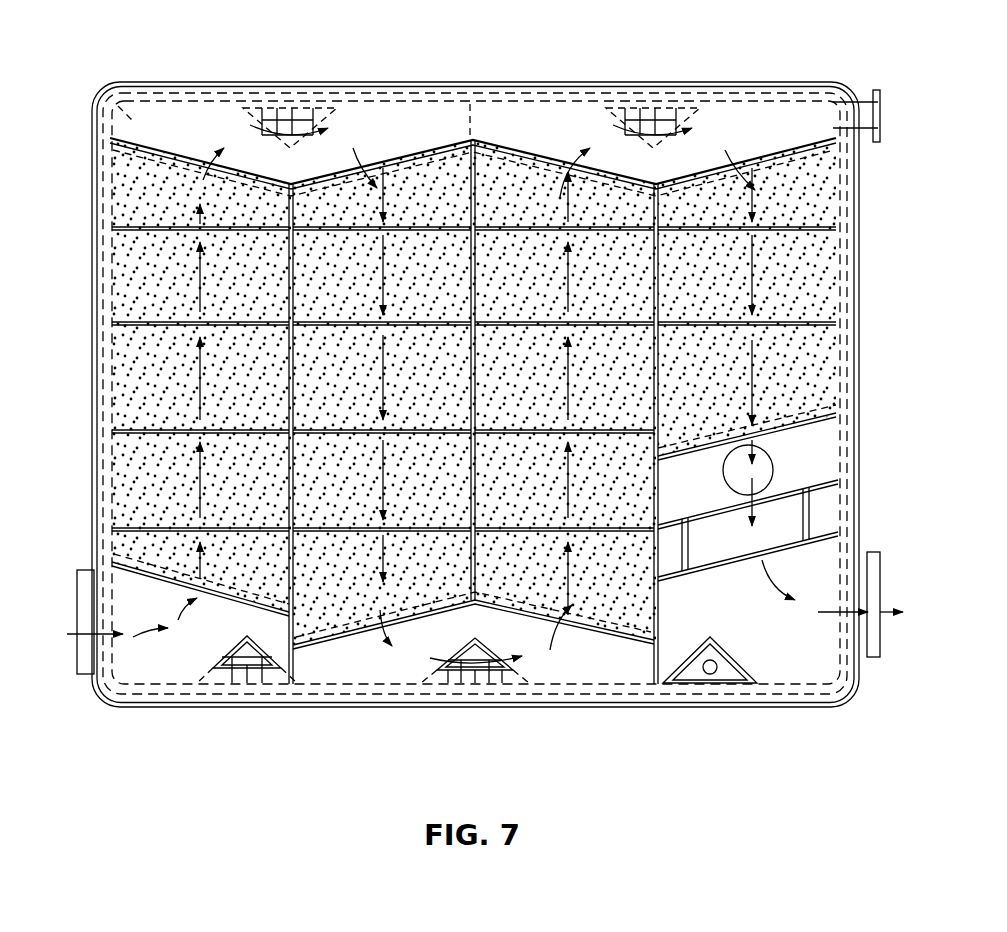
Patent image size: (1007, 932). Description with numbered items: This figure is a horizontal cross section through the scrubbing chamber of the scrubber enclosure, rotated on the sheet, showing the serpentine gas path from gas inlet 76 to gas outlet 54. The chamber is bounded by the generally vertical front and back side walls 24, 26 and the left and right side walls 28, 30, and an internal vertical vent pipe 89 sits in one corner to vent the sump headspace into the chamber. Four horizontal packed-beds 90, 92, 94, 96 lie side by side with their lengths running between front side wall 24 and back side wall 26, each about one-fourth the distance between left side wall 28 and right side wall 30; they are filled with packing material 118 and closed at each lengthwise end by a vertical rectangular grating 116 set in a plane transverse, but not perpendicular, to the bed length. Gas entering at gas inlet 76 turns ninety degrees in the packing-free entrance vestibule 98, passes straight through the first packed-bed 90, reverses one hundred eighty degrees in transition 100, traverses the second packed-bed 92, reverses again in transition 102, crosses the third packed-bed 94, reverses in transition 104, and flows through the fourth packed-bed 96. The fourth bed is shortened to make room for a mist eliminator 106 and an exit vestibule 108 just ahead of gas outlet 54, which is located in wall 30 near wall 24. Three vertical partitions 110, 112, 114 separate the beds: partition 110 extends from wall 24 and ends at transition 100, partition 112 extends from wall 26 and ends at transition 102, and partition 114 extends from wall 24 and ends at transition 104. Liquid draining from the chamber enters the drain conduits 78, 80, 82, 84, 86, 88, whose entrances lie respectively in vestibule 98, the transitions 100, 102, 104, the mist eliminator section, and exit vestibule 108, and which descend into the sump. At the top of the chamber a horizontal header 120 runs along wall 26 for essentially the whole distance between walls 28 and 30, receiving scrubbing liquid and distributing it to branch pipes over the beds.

The front side wall 24 is at (512, 705).
The back side wall 26 is at (245, 88).
The left side wall 28 is at (100, 272).
The right side wall 30 is at (862, 295).
The gas outlet 54 is at (872, 660).
The gas inlet 76 is at (90, 568).
The drain conduit 78 is at (243, 672).
The drain conduit 80 is at (300, 110).
The drain conduit 82 is at (465, 676).
The drain conduit 84 is at (655, 110).
The drain conduit 86 is at (768, 472).
The drain conduit 88 is at (716, 674).
The vent pipe 89 is at (122, 100).
The first packed-bed 90 is at (233, 386).
The second packed-bed 92 is at (414, 386).
The third packed-bed 94 is at (593, 386).
The fourth packed-bed 96 is at (783, 386).
The entrance vestibule 98 is at (181, 656).
The transition 100 is at (273, 175).
The transition 102 is at (457, 641).
The transition 104 is at (635, 175).
The mist eliminator 106 is at (735, 567).
The exit vestibule 108 is at (762, 650).
The vertical partition 110 is at (296, 380).
The vertical partition 112 is at (478, 380).
The vertical partition 114 is at (661, 380).
The grating 116 is at (172, 152).
The packing material 118 is at (130, 187).
The header 120 is at (876, 98).